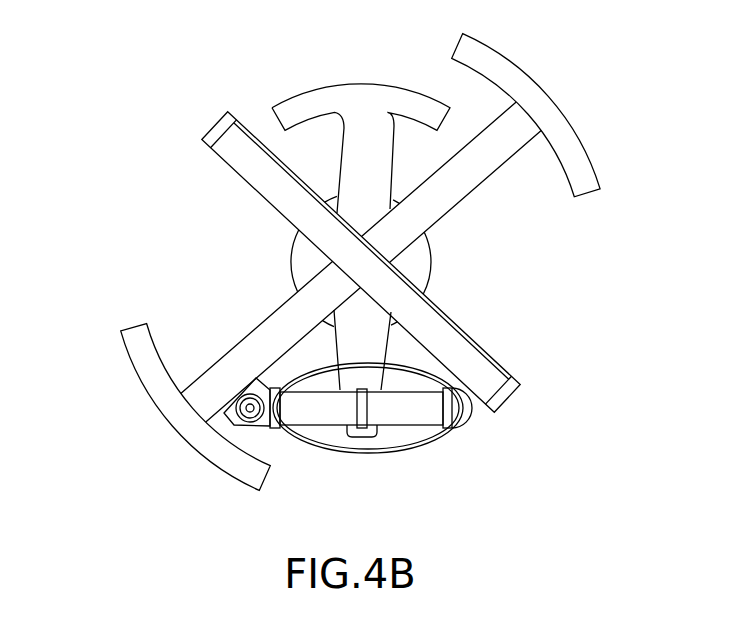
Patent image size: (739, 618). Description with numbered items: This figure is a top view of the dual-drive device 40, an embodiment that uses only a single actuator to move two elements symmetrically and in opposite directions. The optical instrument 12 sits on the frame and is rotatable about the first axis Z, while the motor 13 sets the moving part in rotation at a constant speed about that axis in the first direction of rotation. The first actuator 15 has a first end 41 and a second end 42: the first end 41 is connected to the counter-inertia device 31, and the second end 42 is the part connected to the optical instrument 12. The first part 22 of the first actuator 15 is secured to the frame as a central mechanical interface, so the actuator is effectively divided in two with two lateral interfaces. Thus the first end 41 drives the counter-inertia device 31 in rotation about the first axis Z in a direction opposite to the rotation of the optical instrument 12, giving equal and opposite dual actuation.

The dual-drive device 40 is at (112, 151).
The optical instrument 12 is at (210, 130).
The motor 13 is at (298, 258).
The counter-inertia device 31 is at (140, 380).
The first end 41 is at (240, 397).
The second end 42 is at (474, 414).
The first actuator 15 is at (402, 455).
The first part 22 is at (364, 440).